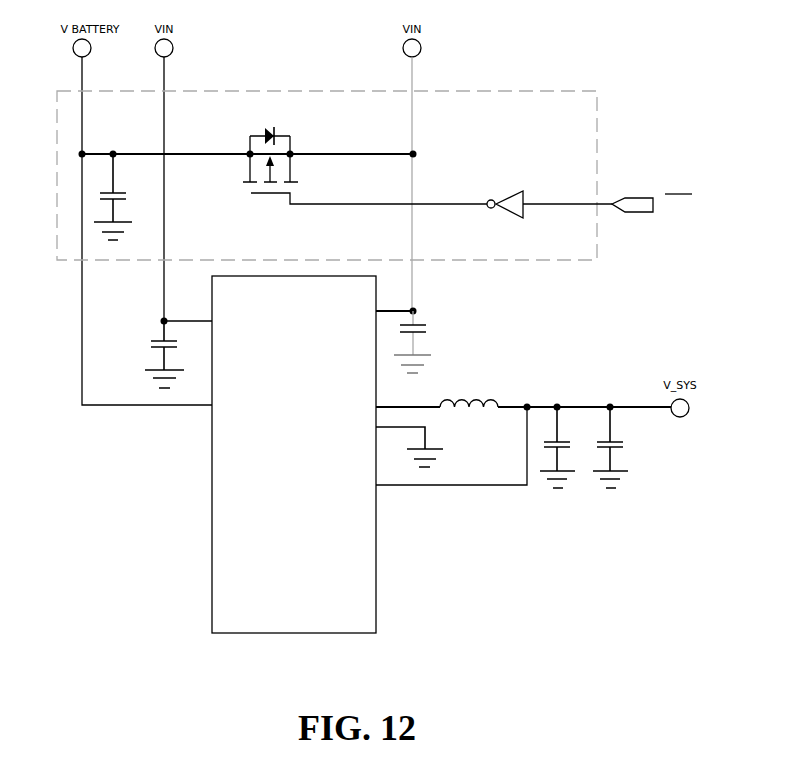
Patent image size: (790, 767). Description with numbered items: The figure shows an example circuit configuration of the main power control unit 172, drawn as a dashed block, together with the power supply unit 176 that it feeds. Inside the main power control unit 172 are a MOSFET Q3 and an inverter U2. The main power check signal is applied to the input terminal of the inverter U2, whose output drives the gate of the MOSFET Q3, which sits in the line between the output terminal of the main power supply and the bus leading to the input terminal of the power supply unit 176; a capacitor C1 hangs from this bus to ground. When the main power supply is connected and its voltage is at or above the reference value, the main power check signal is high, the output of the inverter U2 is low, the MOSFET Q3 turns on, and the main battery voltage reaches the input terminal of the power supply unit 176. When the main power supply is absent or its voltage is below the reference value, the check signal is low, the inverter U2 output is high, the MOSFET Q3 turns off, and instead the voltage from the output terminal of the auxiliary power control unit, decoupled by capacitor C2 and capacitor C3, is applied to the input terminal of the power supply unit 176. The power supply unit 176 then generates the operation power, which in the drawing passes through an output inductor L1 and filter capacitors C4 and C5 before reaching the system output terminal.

The main power control unit 172 is at (374, 143).
The power supply unit 176 is at (212, 537).
The capacitor C1 is at (120, 197).
The capacitor C2 is at (171, 353).
The capacitor C3 is at (419, 342).
The capacitor C4 is at (565, 447).
The capacitor C5 is at (618, 447).
The MOSFET Q3 is at (365, 156).
The inverter U2 is at (549, 194).
The inductor L1 is at (469, 397).